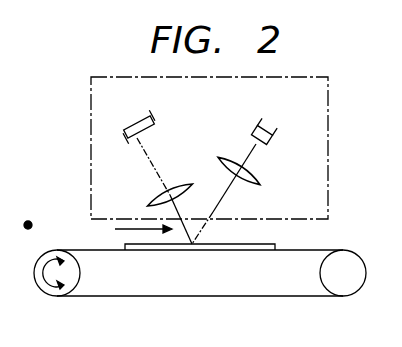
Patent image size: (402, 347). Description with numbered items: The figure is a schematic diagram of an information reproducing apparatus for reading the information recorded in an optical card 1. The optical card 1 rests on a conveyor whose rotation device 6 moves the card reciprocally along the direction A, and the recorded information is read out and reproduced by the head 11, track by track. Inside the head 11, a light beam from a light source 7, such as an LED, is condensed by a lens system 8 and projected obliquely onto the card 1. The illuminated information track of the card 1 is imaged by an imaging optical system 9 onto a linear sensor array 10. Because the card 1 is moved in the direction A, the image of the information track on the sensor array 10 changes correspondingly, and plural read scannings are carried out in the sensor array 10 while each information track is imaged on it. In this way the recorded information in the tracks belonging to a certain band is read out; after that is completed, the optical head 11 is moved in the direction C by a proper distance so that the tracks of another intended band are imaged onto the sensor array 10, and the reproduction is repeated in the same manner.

The optical card 1 is at (279, 245).
The rotation device 6 is at (56, 298).
The light source 7 is at (273, 144).
The lens system 8 is at (261, 182).
The imaging optical system 9 is at (180, 184).
The linear sensor array 10 is at (136, 121).
The head 11 is at (330, 92).
The direction A is at (118, 229).
The direction C is at (28, 220).